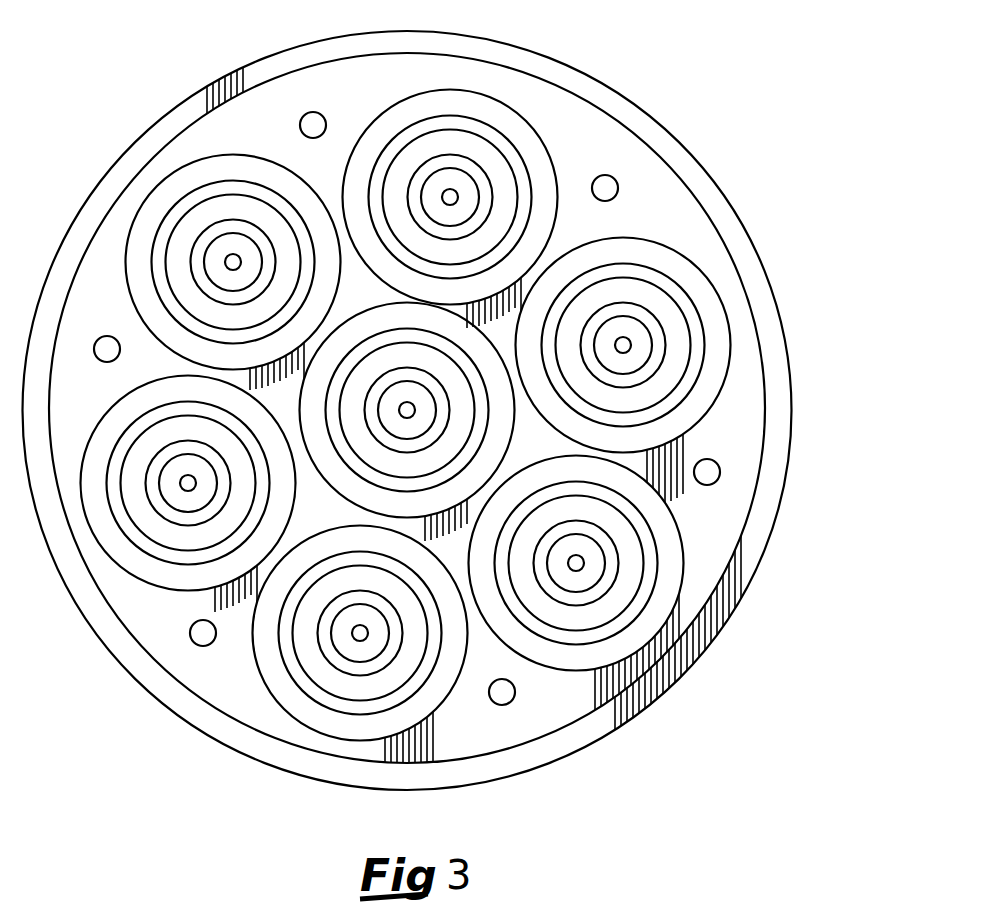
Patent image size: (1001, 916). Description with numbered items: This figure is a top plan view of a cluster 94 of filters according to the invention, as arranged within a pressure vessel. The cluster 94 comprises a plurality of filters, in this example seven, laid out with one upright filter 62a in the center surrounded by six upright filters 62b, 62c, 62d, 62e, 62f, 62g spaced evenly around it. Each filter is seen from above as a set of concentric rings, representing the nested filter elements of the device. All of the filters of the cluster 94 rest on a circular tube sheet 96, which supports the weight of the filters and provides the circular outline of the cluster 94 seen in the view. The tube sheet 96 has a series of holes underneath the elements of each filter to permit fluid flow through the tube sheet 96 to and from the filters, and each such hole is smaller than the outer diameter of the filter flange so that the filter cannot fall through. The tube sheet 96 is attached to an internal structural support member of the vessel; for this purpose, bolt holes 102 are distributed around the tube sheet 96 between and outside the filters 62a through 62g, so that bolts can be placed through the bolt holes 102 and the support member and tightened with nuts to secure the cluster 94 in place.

The upright filter 62a is at (477, 342).
The upright filter 62b is at (708, 310).
The upright filter 62c is at (667, 580).
The upright filter 62d is at (313, 713).
The upright filter 62e is at (113, 540).
The upright filter 62f is at (180, 187).
The upright filter 62g is at (483, 108).
The cluster 94 is at (701, 92).
The circular tube sheet 96 is at (743, 383).
The bolt holes 102 is at (303, 110).